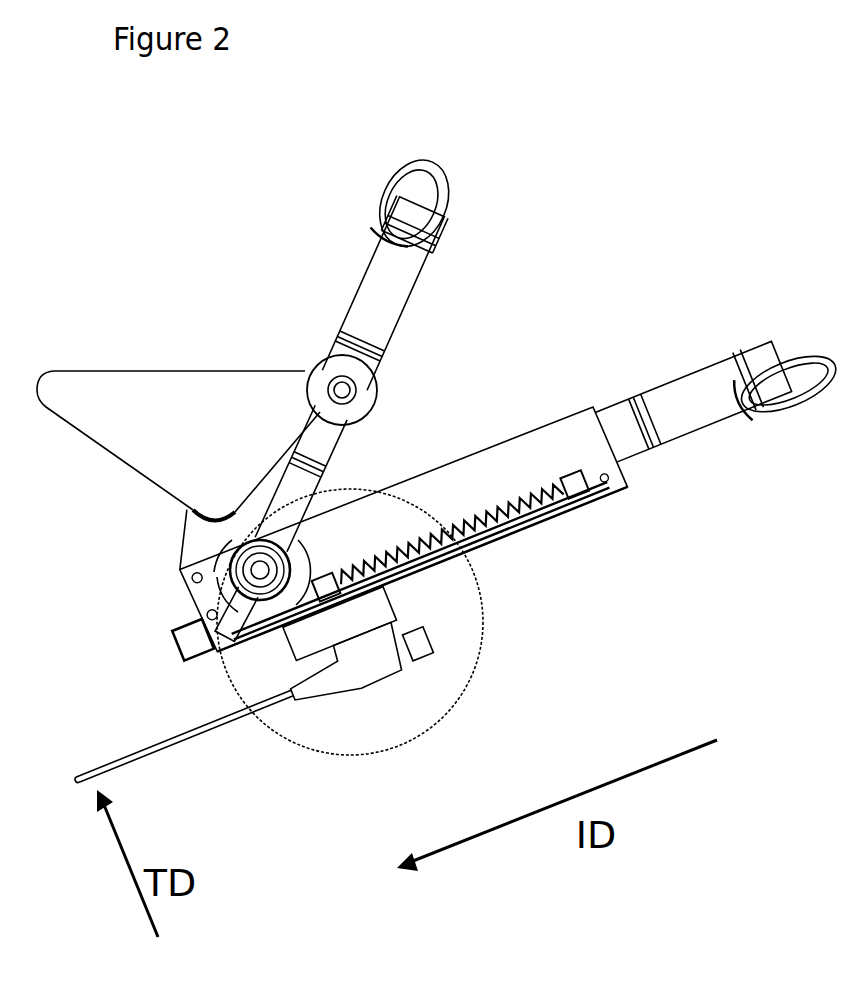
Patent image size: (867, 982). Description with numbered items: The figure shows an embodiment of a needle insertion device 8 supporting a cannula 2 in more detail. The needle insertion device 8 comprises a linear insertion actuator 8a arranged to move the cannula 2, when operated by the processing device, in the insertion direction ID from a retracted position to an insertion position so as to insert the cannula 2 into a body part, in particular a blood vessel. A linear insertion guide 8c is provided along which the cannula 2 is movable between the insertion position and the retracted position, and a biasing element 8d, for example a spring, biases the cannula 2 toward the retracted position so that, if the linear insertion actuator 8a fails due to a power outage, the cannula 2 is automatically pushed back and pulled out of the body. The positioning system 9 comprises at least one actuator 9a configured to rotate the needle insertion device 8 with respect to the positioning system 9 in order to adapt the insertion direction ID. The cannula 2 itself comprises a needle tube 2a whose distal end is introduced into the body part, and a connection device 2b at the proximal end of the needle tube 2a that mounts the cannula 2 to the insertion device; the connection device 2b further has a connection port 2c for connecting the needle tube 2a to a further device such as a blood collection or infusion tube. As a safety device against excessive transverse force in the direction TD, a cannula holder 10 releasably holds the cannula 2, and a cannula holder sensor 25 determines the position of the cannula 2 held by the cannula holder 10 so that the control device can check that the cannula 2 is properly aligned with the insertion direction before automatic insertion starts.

The cannula 2 is at (307, 715).
The needle tube 2a is at (183, 740).
The connection device 2b is at (367, 663).
The connection port 2c is at (415, 648).
The needle insertion device 8 is at (491, 457).
The linear insertion actuator 8a is at (687, 397).
The linear insertion guide 8c is at (483, 540).
The biasing element 8d is at (513, 513).
The positioning system 9 is at (224, 393).
The actuator 9a is at (373, 290).
The cannula holder 10 is at (357, 610).
The cannula holder sensor 25 is at (185, 640).